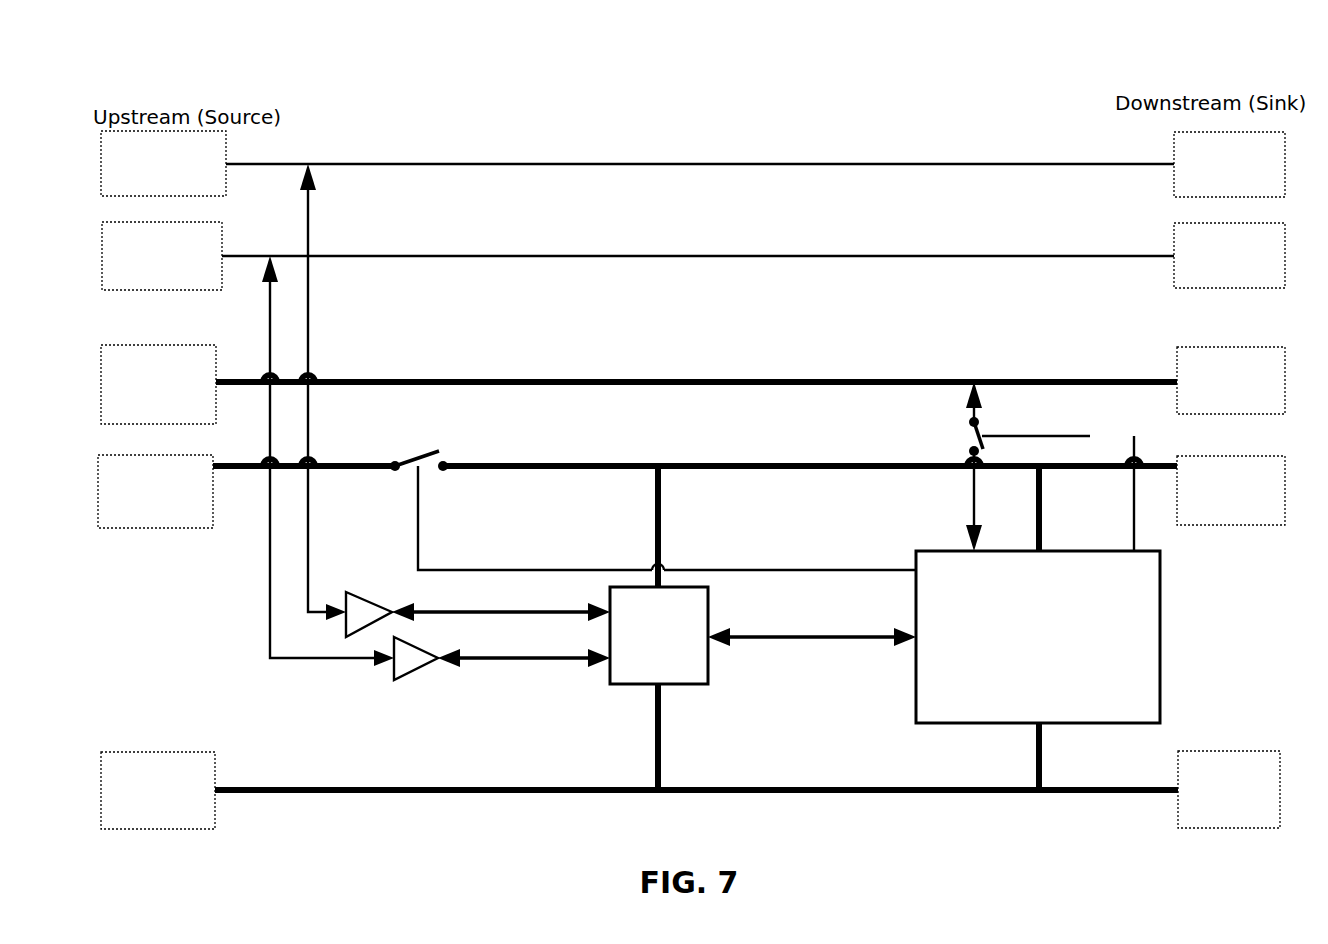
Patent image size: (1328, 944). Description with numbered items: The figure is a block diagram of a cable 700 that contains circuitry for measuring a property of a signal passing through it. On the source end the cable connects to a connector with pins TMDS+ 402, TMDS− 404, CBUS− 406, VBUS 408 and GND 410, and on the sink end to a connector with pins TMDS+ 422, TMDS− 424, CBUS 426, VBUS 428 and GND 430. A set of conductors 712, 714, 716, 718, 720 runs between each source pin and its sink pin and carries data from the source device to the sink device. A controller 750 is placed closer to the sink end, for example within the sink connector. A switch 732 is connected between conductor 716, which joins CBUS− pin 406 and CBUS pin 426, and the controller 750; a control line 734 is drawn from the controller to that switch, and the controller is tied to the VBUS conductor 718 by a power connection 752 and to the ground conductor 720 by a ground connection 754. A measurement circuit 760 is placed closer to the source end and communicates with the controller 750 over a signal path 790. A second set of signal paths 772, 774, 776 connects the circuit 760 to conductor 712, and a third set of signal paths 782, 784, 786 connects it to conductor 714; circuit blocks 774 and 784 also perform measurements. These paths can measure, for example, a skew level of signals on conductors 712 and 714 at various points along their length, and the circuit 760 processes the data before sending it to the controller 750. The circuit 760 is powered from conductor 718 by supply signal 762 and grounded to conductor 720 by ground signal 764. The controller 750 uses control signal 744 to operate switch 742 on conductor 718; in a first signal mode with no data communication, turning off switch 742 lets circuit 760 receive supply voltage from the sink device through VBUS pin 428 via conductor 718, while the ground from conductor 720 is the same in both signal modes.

The cable 700 is at (1268, 49).
The TMDS+ pin 402 is at (163, 163).
The TMDS− pin 404 is at (162, 256).
The CBUS− pin 406 is at (158, 384).
The VBUS pin 408 is at (155, 491).
The GND pin 410 is at (158, 790).
The TMDS+ pin 422 is at (1229, 164).
The TMDS− pin 424 is at (1229, 255).
The CBUS pin 426 is at (1231, 380).
The VBUS pin 428 is at (1231, 490).
The GND pin 430 is at (1229, 789).
The conductor 712 is at (700, 162).
The conductor 714 is at (698, 254).
The conductor 716 is at (696, 381).
The conductor 718 is at (695, 465).
The conductor 720 is at (696, 789).
The switch 732 is at (955, 466).
The switch control line 734 is at (1058, 488).
The switch 742 is at (419, 450).
The control signal 744 is at (667, 523).
The controller 750 is at (1038, 635).
The controller power line 752 is at (1039, 508).
The controller ground line 754 is at (1039, 756).
The circuit 760 is at (659, 635).
The signal 762 is at (659, 526).
The signal 764 is at (659, 737).
The signal path 772 is at (501, 611).
The circuit block 774 is at (372, 602).
The signal path 776 is at (318, 392).
The signal path 782 is at (524, 657).
The circuit block 784 is at (416, 668).
The signal path 786 is at (323, 461).
The signal path 790 is at (812, 646).